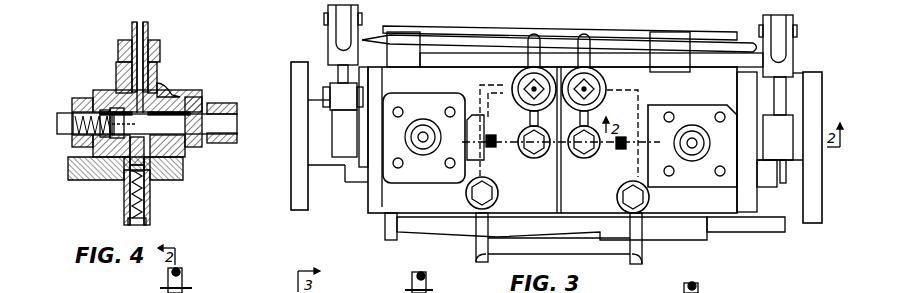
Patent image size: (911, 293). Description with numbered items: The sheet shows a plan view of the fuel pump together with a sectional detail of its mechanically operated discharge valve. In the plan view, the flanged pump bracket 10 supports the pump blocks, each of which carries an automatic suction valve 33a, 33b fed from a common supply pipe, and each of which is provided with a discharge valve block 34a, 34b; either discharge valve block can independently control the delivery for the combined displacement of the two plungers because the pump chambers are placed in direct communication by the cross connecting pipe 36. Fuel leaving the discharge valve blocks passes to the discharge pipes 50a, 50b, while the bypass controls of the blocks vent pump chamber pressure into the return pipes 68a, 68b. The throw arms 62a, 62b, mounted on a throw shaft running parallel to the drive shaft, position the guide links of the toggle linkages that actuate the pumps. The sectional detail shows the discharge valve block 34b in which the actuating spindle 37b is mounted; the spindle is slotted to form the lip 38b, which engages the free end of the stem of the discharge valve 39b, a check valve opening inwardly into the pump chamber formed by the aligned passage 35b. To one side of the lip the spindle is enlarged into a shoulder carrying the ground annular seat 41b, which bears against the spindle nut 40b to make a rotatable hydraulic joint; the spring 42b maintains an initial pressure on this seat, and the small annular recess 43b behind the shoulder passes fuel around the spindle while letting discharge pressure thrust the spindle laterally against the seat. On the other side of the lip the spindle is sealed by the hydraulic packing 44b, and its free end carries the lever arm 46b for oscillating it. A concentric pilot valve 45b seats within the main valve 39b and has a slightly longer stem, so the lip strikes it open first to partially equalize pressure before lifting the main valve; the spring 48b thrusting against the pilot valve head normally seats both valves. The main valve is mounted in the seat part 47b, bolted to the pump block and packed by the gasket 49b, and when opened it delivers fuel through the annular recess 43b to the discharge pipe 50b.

In FIG. 3, the flanged pump bracket 10 is at (627, 36).
In FIG. 3, the automatic suction valve 33a is at (531, 160).
In FIG. 3, the automatic suction valve 33b is at (583, 160).
In FIG. 3, the discharge valve block 34a is at (407, 176).
In FIG. 4, the discharge valve block 34b is at (162, 88).
In FIG. 3, the discharge valve block 34b is at (697, 184).
In FIG. 3, the cross connecting pipe 36 is at (562, 248).
In FIG. 3, the discharge pipe 50a is at (412, 273).
In FIG. 4, the discharge pipe 50b is at (150, 31).
In FIG. 3, the discharge pipe 50b is at (696, 283).
In FIG. 3, the throw arm 62a is at (328, 62).
In FIG. 3, the throw arm 62b is at (790, 72).
In FIG. 3, the return pipe 68a is at (476, 252).
In FIG. 3, the return pipe 68b is at (640, 258).
In FIG. 4, the aligned passage 35b is at (107, 181).
In FIG. 4, the actuating spindle 37b is at (193, 127).
In FIG. 4, the lip 38b is at (165, 102).
In FIG. 4, the discharge valve 39b is at (148, 172).
In FIG. 4, the spindle nut 40b is at (80, 98).
In FIG. 4, the ground annular seat 41b is at (90, 148).
In FIG. 4, the spring 42b is at (98, 152).
In FIG. 4, the annular recess 43b is at (118, 90).
In FIG. 4, the hydraulic packing 44b is at (182, 147).
In FIG. 4, the pilot valve 45b is at (120, 190).
In FIG. 4, the lever arm 46b is at (237, 107).
In FIG. 4, the seat part 47b is at (150, 167).
In FIG. 4, the spring 48b is at (147, 219).
In FIG. 4, the gasket 49b is at (147, 168).